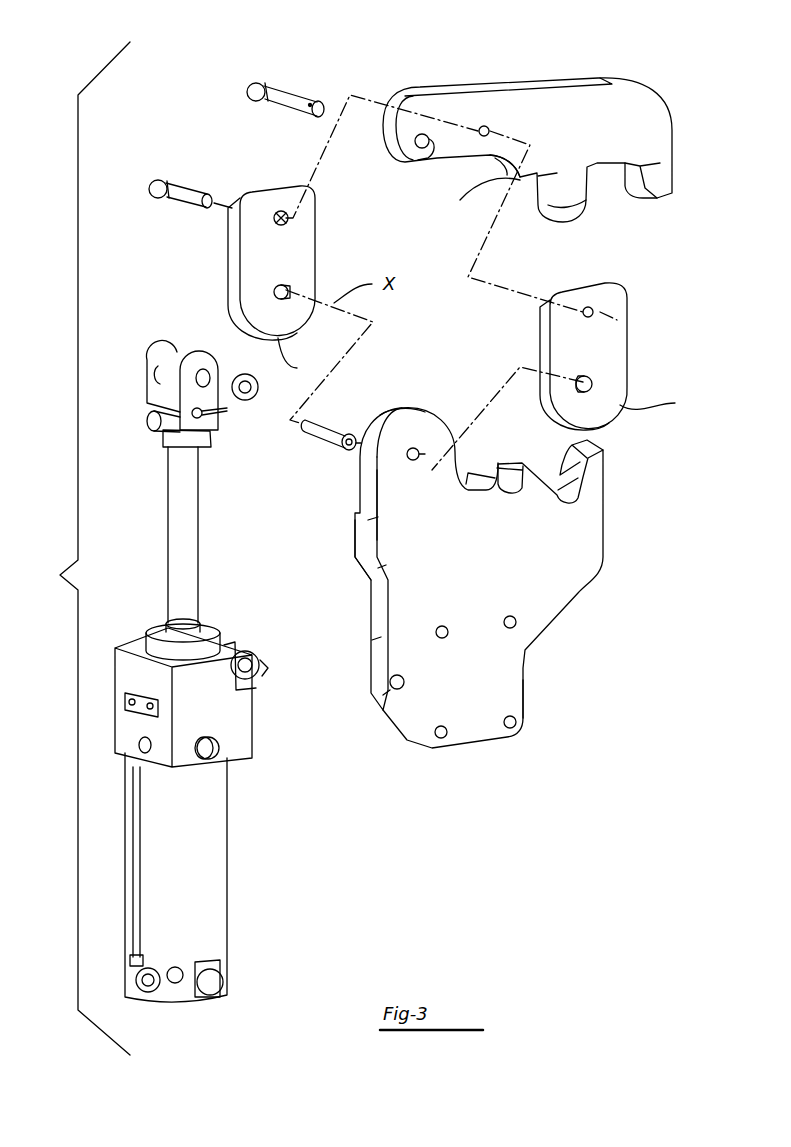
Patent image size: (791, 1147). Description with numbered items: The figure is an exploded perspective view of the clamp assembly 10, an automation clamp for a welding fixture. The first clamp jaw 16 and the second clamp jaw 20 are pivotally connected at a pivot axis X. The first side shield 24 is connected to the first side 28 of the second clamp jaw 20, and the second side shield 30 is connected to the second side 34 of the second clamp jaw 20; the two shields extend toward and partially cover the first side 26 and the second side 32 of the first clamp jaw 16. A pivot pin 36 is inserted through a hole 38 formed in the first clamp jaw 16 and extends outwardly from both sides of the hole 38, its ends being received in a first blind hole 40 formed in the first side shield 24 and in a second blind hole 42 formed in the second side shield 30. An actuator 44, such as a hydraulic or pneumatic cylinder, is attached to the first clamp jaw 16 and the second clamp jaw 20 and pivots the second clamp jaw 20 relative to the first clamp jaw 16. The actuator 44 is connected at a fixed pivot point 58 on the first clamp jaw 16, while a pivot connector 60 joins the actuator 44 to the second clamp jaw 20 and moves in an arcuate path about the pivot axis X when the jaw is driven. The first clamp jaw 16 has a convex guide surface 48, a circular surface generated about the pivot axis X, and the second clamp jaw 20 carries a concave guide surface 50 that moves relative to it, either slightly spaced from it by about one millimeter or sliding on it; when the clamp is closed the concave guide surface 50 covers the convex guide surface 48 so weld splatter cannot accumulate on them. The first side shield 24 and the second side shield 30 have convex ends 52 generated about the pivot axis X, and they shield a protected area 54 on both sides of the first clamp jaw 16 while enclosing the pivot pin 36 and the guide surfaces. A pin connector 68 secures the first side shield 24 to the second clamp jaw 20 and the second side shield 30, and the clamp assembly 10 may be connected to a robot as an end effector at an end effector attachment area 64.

The clamp assembly 10 is at (58, 575).
The first clamp jaw 16 is at (451, 544).
The second clamp jaw 20 is at (553, 140).
The first side shield 24 is at (299, 263).
The first side of the first clamp jaw 26 is at (349, 541).
The first side of the second clamp jaw 28 is at (386, 92).
The second side shield 30 is at (552, 356).
The second side of the first clamp jaw 32 is at (476, 558).
The second side of the second jaw 34 is at (588, 128).
The pivot pin 36 is at (312, 440).
The hole 38 is at (418, 461).
The first blind hole 40 is at (290, 289).
The second blind hole 42 is at (577, 382).
The actuator 44 is at (201, 856).
The convex guide surface 48 is at (392, 412).
The concave guide surface 50 is at (505, 165).
The convex ends 52 is at (489, 376).
The protected area 54 is at (392, 452).
The fixed pivot point 58 is at (404, 683).
The pivot connector 60 is at (424, 158).
The end effector attachment area 64 is at (507, 687).
The pin connector 68 is at (172, 180).